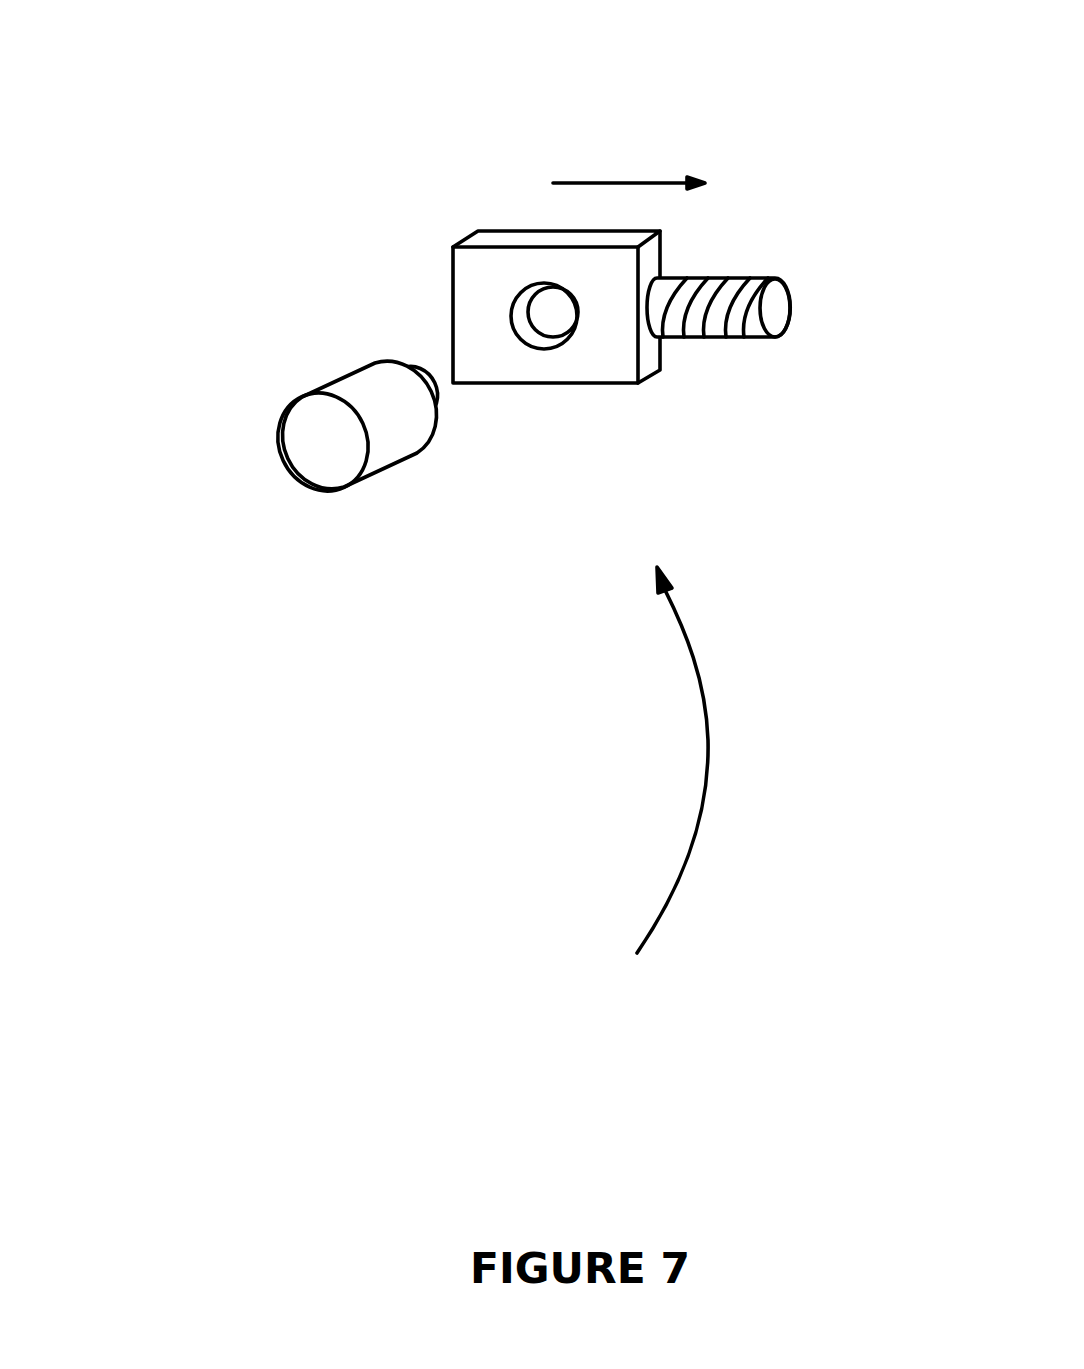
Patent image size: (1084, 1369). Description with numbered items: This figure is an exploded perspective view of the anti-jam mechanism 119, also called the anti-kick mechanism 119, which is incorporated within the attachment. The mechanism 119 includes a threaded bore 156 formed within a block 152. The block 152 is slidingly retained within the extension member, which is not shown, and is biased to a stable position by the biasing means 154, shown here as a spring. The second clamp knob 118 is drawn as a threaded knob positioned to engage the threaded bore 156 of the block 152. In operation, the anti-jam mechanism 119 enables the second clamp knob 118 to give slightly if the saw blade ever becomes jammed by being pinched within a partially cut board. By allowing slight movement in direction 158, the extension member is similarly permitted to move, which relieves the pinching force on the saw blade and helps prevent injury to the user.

The second clamp knob 118 is at (313, 452).
The anti-jam mechanism 119 is at (637, 785).
The block 152 is at (507, 236).
The biasing means 154 is at (715, 324).
The threaded bore 156 is at (528, 326).
The direction 158 is at (647, 183).